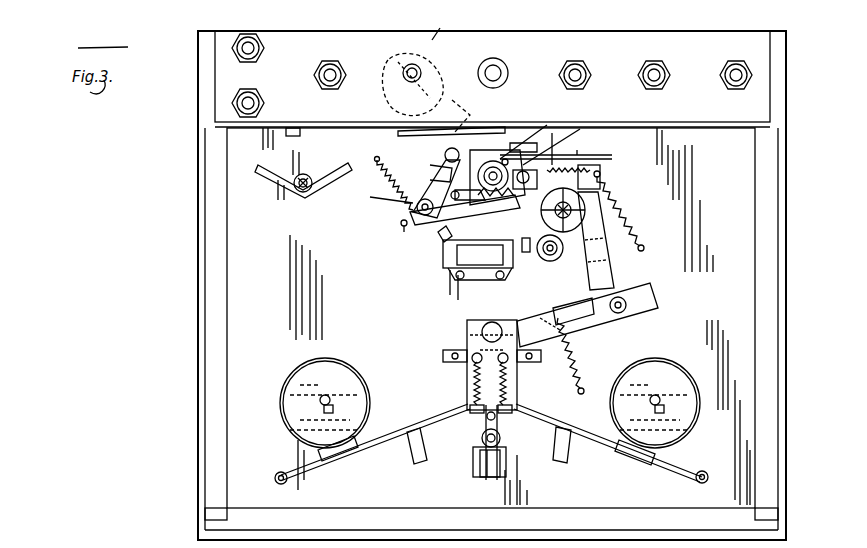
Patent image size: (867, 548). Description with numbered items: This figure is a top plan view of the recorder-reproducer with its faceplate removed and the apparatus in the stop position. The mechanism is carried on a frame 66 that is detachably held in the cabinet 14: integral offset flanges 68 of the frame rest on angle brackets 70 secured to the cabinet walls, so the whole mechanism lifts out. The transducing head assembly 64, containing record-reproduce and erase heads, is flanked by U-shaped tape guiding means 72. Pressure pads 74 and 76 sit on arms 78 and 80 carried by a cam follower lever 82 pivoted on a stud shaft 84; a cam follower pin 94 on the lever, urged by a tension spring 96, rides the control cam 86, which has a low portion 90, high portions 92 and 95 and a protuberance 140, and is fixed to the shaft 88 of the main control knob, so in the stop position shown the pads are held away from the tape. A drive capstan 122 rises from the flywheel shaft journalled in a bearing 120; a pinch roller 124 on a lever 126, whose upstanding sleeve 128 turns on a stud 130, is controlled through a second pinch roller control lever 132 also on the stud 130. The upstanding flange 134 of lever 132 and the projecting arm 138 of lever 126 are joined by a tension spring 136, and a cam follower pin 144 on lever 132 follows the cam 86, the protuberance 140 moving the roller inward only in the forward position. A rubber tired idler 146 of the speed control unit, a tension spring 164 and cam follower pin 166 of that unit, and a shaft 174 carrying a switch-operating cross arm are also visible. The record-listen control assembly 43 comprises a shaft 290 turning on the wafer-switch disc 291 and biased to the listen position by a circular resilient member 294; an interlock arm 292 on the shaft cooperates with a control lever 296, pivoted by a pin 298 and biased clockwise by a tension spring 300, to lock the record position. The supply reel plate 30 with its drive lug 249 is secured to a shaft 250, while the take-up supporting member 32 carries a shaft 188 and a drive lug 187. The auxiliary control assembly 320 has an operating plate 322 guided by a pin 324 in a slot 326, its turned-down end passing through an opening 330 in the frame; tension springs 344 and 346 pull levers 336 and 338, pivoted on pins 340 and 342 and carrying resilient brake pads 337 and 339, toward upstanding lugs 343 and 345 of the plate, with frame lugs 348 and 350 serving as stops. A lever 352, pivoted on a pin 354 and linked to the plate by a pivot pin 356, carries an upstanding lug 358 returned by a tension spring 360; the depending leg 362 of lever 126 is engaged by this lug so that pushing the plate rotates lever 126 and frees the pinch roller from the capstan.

The cabinet 14 is at (205, 112).
The record-listen control assembly 43 is at (493, 58).
The circular resilient member 294 is at (398, 64).
The disc of wafer switch 291 is at (451, 25).
The shaft 290 is at (418, 68).
The interlock arm 292 is at (470, 100).
The frame 66 is at (245, 302).
The offset flanges 68 is at (212, 410).
The angle brackets 70 is at (205, 526).
The tension spring 164 is at (285, 186).
The shaft 174 is at (303, 193).
The cam follower pin 166 is at (288, 136).
The control lever 296 is at (398, 133).
The cam follower lever 82 is at (440, 182).
The high portion 92 is at (445, 155).
The cam follower pin 94 is at (430, 168).
The tension spring 96 is at (390, 180).
The high portion 95 is at (377, 204).
The stud shaft 84 is at (417, 209).
The arm 78 is at (420, 226).
The low portion 90 is at (495, 177).
The stud 130 is at (479, 179).
The transducing head assembly 64 is at (450, 266).
The pressure pad 76 is at (478, 260).
The arm 80 is at (480, 255).
The pressure pad 74 is at (446, 243).
The tape guiding means 72 is at (436, 243).
The drive capstan 122 is at (548, 262).
The bearing 120 is at (554, 262).
The pin 298 is at (482, 142).
The rubber tired idler 146 is at (534, 134).
The control cam 86 is at (520, 159).
The shaft 88 is at (548, 156).
The protuberance 140 is at (560, 166).
The projecting arm 138 is at (560, 147).
The tension spring 136 is at (600, 170).
The upstanding flange 134 is at (601, 174).
The pinch roller control lever 132 is at (603, 186).
The pinch roller 124 is at (610, 197).
The lever 126 is at (617, 210).
The tension spring 300 is at (624, 224).
The cam follower pin 144 is at (563, 210).
The upstanding sleeve 128 is at (564, 216).
The depending leg 362 is at (606, 272).
The lever 352 is at (655, 300).
The pin 354 is at (620, 313).
The upstanding lug 358 is at (580, 320).
The tension spring 360 is at (582, 356).
The auxiliary control assembly 320 is at (433, 393).
The pivot pin 356 is at (482, 332).
The tension spring 346 is at (474, 386).
The upstanding lug 345 is at (468, 409).
The tension spring 344 is at (508, 383).
The upstanding lug 343 is at (515, 407).
The operating plate 322 is at (486, 422).
The pin 324 is at (500, 438).
The slot 326 is at (480, 462).
The opening 330 is at (505, 477).
The lever 338 is at (372, 442).
The resilient brake pad 339 is at (337, 462).
The pivot pin 342 is at (280, 485).
The upstanding lug 348 is at (410, 452).
The lever 336 is at (597, 440).
The resilient brake pad 337 is at (625, 440).
The pivot pin 340 is at (700, 484).
The upstanding lug 350 is at (568, 464).
The plate 30 is at (308, 366).
The shaft 250 is at (326, 396).
The upstanding lug 249 is at (323, 408).
The supporting member 32 is at (690, 382).
The shaft 188 is at (655, 394).
The upstanding lug 187 is at (665, 411).